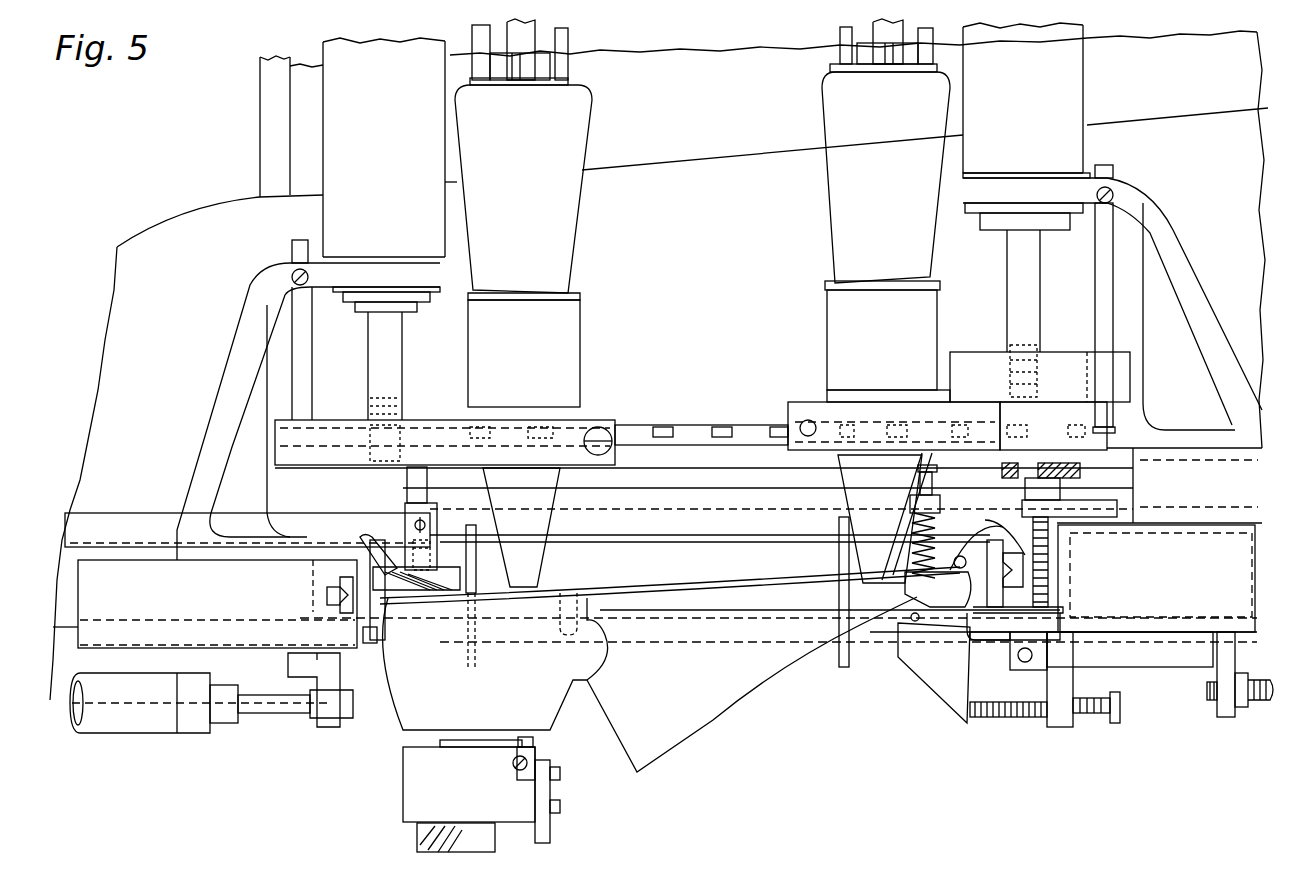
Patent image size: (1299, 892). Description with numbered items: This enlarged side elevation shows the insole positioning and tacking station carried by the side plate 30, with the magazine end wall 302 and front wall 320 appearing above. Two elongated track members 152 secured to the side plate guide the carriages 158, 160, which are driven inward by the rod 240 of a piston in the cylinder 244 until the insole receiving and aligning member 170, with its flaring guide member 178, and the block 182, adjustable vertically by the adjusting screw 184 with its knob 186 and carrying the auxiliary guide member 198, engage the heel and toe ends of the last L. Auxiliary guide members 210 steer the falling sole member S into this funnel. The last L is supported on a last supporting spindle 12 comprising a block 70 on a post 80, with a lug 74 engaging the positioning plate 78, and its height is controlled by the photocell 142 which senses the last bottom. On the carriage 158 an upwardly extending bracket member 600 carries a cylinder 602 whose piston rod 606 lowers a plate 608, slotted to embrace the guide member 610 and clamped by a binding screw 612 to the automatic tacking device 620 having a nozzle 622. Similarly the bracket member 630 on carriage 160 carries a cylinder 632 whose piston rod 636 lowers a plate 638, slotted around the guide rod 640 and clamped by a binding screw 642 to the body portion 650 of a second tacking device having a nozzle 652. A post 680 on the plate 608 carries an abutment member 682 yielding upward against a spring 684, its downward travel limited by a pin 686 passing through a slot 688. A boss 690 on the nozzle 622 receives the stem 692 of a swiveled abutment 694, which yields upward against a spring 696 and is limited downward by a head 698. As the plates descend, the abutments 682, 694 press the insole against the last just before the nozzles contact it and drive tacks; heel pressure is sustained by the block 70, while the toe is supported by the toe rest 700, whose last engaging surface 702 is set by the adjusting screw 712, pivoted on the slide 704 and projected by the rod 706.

The front wall 320 is at (675, 52).
The end wall 302 is at (258, 103).
The side plate 30 is at (173, 213).
The cylinder 602 is at (360, 119).
The piston rod 606 is at (403, 387).
The guide member 610 is at (291, 249).
The bracket member 600 is at (242, 313).
The plate 608 is at (273, 443).
The binding screw 612 is at (598, 427).
The automatic tacking device 620 is at (592, 333).
The nozzle 622 is at (548, 528).
The body portion of tacking device 650 is at (813, 328).
The cylinder 632 is at (993, 114).
The piston rod 636 is at (1042, 293).
The guide rod 640 is at (1117, 243).
The bracket member 630 is at (1183, 268).
The plate 638 is at (1132, 378).
The binding screw 642 is at (807, 421).
The nozzle 652 is at (840, 532).
The track member 152 is at (110, 513).
The carriage 158 is at (97, 604).
The carriage 160 is at (1187, 592).
The post 680 is at (430, 477).
The pin 686 is at (417, 522).
The slot 688 is at (418, 530).
The abutment member 682 is at (433, 523).
The spring 684 is at (405, 555).
The guide member 178 is at (365, 535).
The photocell 142 is at (574, 590).
The sole member S is at (693, 578).
The auxiliary guide member 210 is at (840, 556).
The head 698 is at (915, 462).
The boss 690 is at (942, 503).
The stem 692 is at (916, 515).
The spring 696 is at (912, 553).
The swiveled abutment 694 is at (918, 583).
The knob 186 is at (1082, 470).
The adjusting screw 184 is at (1047, 528).
The auxiliary guide member 198 is at (1048, 560).
The block 182 is at (1050, 602).
The insole receiving and aligning member 170 is at (345, 650).
The rod 240 is at (276, 714).
The cylinder 244 is at (130, 735).
The last supporting spindle 12 is at (403, 773).
The block 70 is at (403, 800).
The positioning plate 78 is at (473, 742).
The post 80 is at (415, 831).
The lug 74 is at (537, 744).
The last L is at (708, 718).
The toe rest 700 is at (917, 680).
The last engaging surface 702 is at (913, 622).
The adjusting screw 712 is at (1007, 718).
The slide 704 is at (1182, 668).
The rod 706 is at (1270, 703).